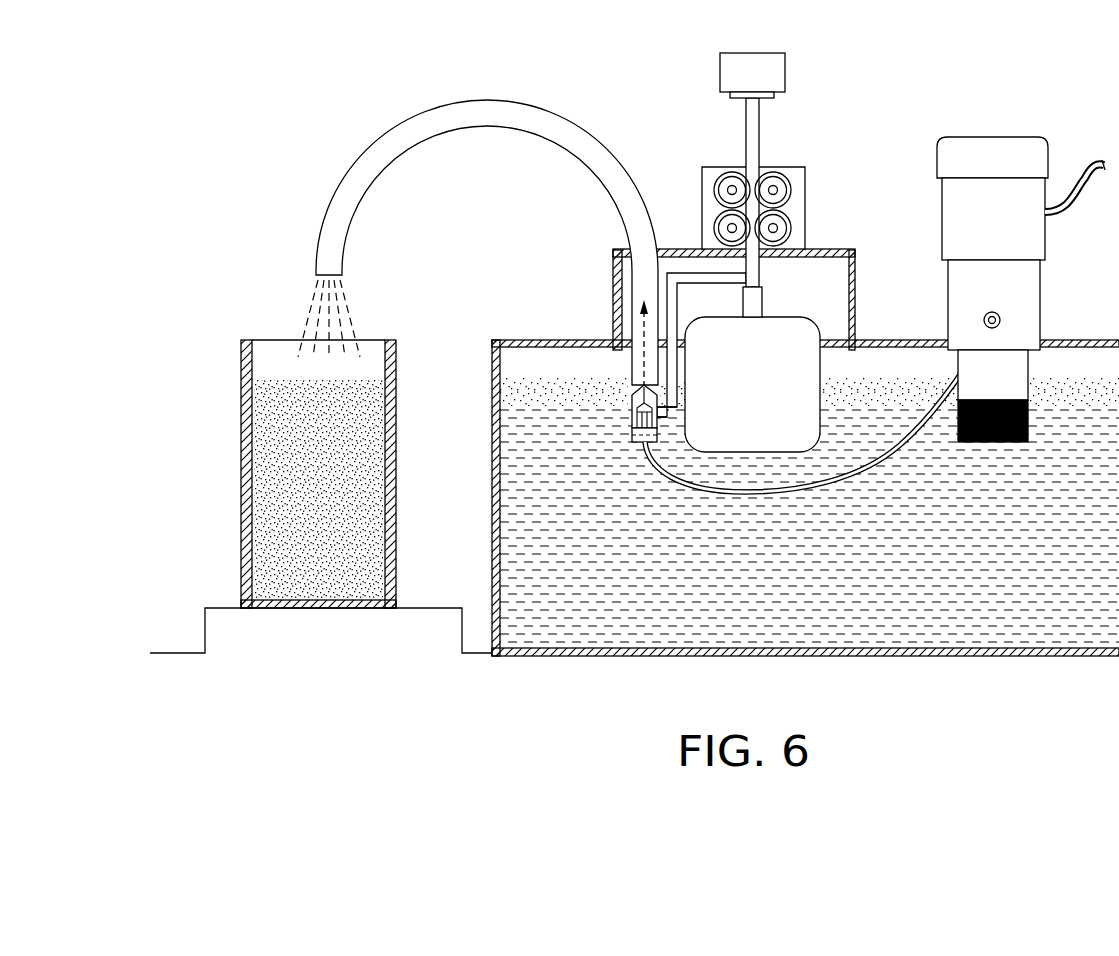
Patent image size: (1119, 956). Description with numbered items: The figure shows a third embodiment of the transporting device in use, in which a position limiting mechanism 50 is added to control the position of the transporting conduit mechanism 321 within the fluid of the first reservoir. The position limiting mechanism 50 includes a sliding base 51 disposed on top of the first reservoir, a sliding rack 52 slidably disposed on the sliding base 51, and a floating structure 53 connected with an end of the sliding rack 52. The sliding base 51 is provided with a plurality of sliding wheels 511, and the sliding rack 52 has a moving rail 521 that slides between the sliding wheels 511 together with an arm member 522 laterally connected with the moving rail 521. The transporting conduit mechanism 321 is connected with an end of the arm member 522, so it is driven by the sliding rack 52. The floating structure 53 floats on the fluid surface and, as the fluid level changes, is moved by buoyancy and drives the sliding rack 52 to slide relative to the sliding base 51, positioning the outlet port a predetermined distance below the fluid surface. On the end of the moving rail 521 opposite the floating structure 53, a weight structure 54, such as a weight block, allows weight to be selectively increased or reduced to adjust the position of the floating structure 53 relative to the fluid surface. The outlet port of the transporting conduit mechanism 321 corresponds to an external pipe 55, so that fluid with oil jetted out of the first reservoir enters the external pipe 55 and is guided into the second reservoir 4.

The second reservoir 4 is at (242, 470).
The position limiting mechanism 50 is at (611, 351).
The sliding base 51 is at (742, 164).
The sliding wheels 511 is at (727, 180).
The sliding rack 52 is at (782, 271).
The moving rail 521 is at (746, 132).
The arm member 522 is at (688, 278).
The floating structure 53 is at (783, 418).
The weight structure 54 is at (768, 64).
The external pipe 55 is at (360, 185).
The transporting conduit mechanism 321 is at (625, 388).